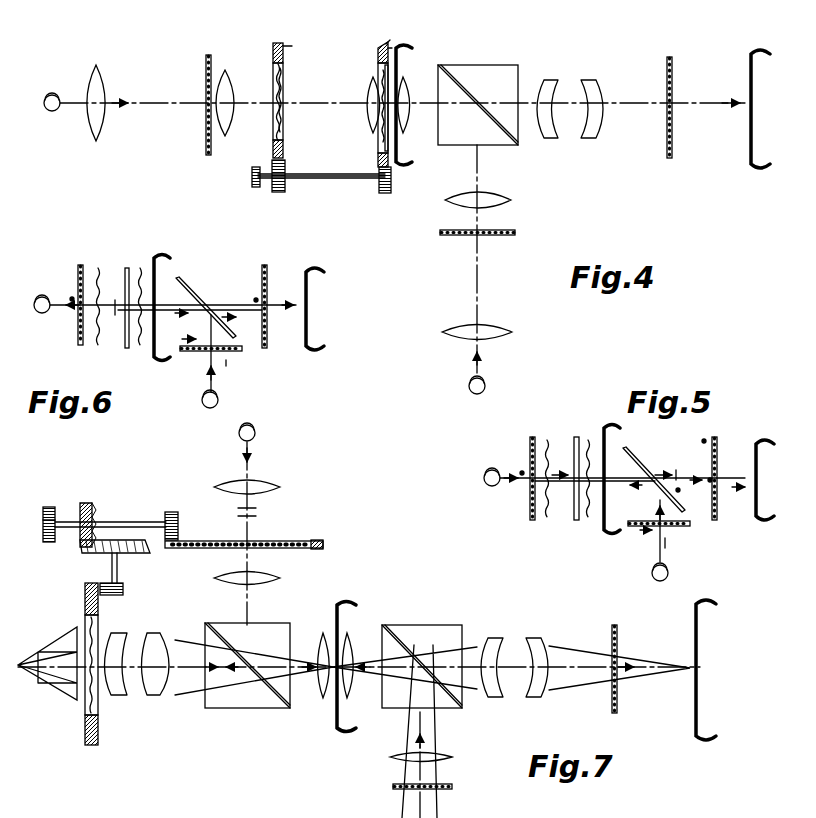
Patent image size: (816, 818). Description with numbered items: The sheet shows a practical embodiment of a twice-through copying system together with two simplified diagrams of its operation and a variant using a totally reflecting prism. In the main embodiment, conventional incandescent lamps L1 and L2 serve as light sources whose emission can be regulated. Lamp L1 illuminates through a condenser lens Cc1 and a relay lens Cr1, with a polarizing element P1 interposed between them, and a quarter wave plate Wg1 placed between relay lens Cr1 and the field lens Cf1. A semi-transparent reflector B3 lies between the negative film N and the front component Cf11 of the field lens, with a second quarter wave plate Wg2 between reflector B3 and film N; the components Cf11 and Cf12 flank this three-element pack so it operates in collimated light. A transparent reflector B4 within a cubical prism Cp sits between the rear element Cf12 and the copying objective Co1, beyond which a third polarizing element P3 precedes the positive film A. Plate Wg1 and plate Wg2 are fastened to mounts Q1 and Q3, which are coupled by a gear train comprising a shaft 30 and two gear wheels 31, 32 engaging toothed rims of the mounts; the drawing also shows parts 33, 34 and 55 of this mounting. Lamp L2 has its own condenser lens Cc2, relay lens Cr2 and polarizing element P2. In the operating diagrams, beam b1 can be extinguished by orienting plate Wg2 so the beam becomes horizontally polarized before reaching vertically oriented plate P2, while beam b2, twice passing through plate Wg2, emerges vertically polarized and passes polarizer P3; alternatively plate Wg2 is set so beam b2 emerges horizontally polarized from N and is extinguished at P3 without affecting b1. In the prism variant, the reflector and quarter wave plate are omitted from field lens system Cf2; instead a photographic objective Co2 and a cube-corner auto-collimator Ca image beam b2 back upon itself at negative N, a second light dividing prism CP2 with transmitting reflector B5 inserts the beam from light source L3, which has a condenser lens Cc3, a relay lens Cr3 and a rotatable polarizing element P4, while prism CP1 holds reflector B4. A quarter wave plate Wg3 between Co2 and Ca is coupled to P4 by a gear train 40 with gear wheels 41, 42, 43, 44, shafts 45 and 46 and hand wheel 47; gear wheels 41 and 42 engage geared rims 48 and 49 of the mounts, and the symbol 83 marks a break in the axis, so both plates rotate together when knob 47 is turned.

In FIG. 4, the incandescent lamp L1 is at (54, 111).
In FIG. 6, the incandescent lamp L1 is at (42, 313).
In FIG. 5, the incandescent lamp L1 is at (486, 490).
In FIG. 4, the incandescent lamp L2 is at (470, 384).
In FIG. 6, the incandescent lamp L2 is at (218, 399).
In FIG. 5, the incandescent lamp L2 is at (668, 574).
In FIG. 7, the light source L3 is at (256, 435).
In FIG. 4, the condenser lens Cc1 is at (100, 76).
In FIG. 4, the condenser lens Cc2 is at (486, 330).
In FIG. 7, the condenser lens Cc3 is at (268, 486).
In FIG. 4, the relay lens Cr1 is at (229, 74).
In FIG. 4, the relay lens Cr2 is at (485, 199).
In FIG. 7, the relay lens Cr2 is at (450, 757).
In FIG. 7, the relay lens Cr3 is at (274, 580).
In FIG. 4, the polarizing element P1 is at (206, 73).
In FIG. 6, the polarizing element P1 is at (78, 280).
In FIG. 5, the polarizing element P1 is at (530, 447).
In FIG. 4, the polarizing element P2 is at (458, 236).
In FIG. 6, the polarizing element P2 is at (194, 352).
In FIG. 5, the polarizing element P2 is at (630, 527).
In FIG. 7, the polarizing element P2 is at (393, 786).
In FIG. 4, the polarizing element P3 is at (668, 155).
In FIG. 6, the polarizing element P3 is at (262, 268).
In FIG. 5, the polarizing element P3 is at (720, 440).
In FIG. 7, the polarizing element P3 is at (619, 640).
In FIG. 7, the rotatable polarizing element P4 is at (292, 541).
In FIG. 4, the quarter wave plate Wg1 is at (277, 122).
In FIG. 6, the quarter wave plate Wg1 is at (98, 268).
In FIG. 5, the quarter wave plate Wg1 is at (547, 440).
In FIG. 4, the quarter wave plate Wg2 is at (384, 110).
In FIG. 6, the quarter wave plate Wg2 is at (150, 265).
In FIG. 5, the quarter wave plate Wg2 is at (588, 440).
In FIG. 7, the quarter wave plate Wg3 is at (96, 642).
In FIG. 4, the mount Q1 is at (277, 43).
In FIG. 4, the mount Q3 is at (380, 46).
In FIG. 4, the semi-transparent reflector B3 is at (380, 140).
In FIG. 6, the semi-transparent reflector B3 is at (127, 268).
In FIG. 5, the semi-transparent reflector B3 is at (574, 518).
In FIG. 4, the transparent reflector B4 is at (460, 82).
In FIG. 6, the transparent reflector B4 is at (198, 292).
In FIG. 5, the transparent reflector B4 is at (640, 456).
In FIG. 7, the transparent reflector B4 is at (400, 640).
In FIG. 7, the transmitting reflector B5 is at (264, 700).
In FIG. 4, the negative film N is at (401, 66).
In FIG. 6, the negative film N is at (150, 350).
In FIG. 5, the negative film N is at (602, 520).
In FIG. 7, the negative film N is at (348, 596).
In FIG. 4, the field lens Cf1 is at (389, 42).
In FIG. 4, the front component of field lens Cf11 is at (369, 100).
In FIG. 4, the rear element of field lens Cf12 is at (408, 128).
In FIG. 7, the field lens system Cf2 is at (321, 650).
In FIG. 4, the cubical prism Cp is at (505, 82).
In FIG. 7, the cubical prism CP1 is at (440, 636).
In FIG. 7, the second light dividing prism CP2 is at (224, 702).
In FIG. 4, the copying objective Co1 is at (554, 138).
In FIG. 7, the copying objective Co1 is at (535, 640).
In FIG. 7, the photographic objective Co2 is at (135, 700).
In FIG. 7, the cube-corner auto-collimator Ca is at (52, 696).
In FIG. 4, the positive film A is at (752, 100).
In FIG. 6, the positive film A is at (308, 305).
In FIG. 5, the positive film A is at (758, 480).
In FIG. 7, the positive film A is at (700, 645).
In FIG. 6, the beam b1 is at (115, 312).
In FIG. 5, the beam b1 is at (678, 478).
In FIG. 6, the beam b2 is at (220, 364).
In FIG. 5, the beam b2 is at (666, 540).
In FIG. 4, the shaft 30 is at (338, 181).
In FIG. 4, the gear wheel 31 is at (278, 192).
In FIG. 4, the gear wheel 32 is at (385, 193).
In FIG. 4, the plate mount 33 is at (284, 47).
In FIG. 4, the plate mount 34 is at (390, 48).
In FIG. 4, the drive gear 55 is at (252, 177).
In FIG. 7, the gear train 40 is at (128, 520).
In FIG. 7, the gear wheel 41 is at (124, 590).
In FIG. 7, the gear wheel 42 is at (182, 506).
In FIG. 7, the gear wheel 43 is at (95, 555).
In FIG. 7, the gear wheel 44 is at (88, 503).
In FIG. 7, the shaft 45 is at (117, 574).
In FIG. 7, the shaft 46 is at (66, 520).
In FIG. 7, the hand wheel 47 is at (46, 538).
In FIG. 7, the geared rim 48 is at (92, 745).
In FIG. 7, the geared rim 49 is at (320, 540).
In FIG. 7, the gap mark 83 is at (242, 512).